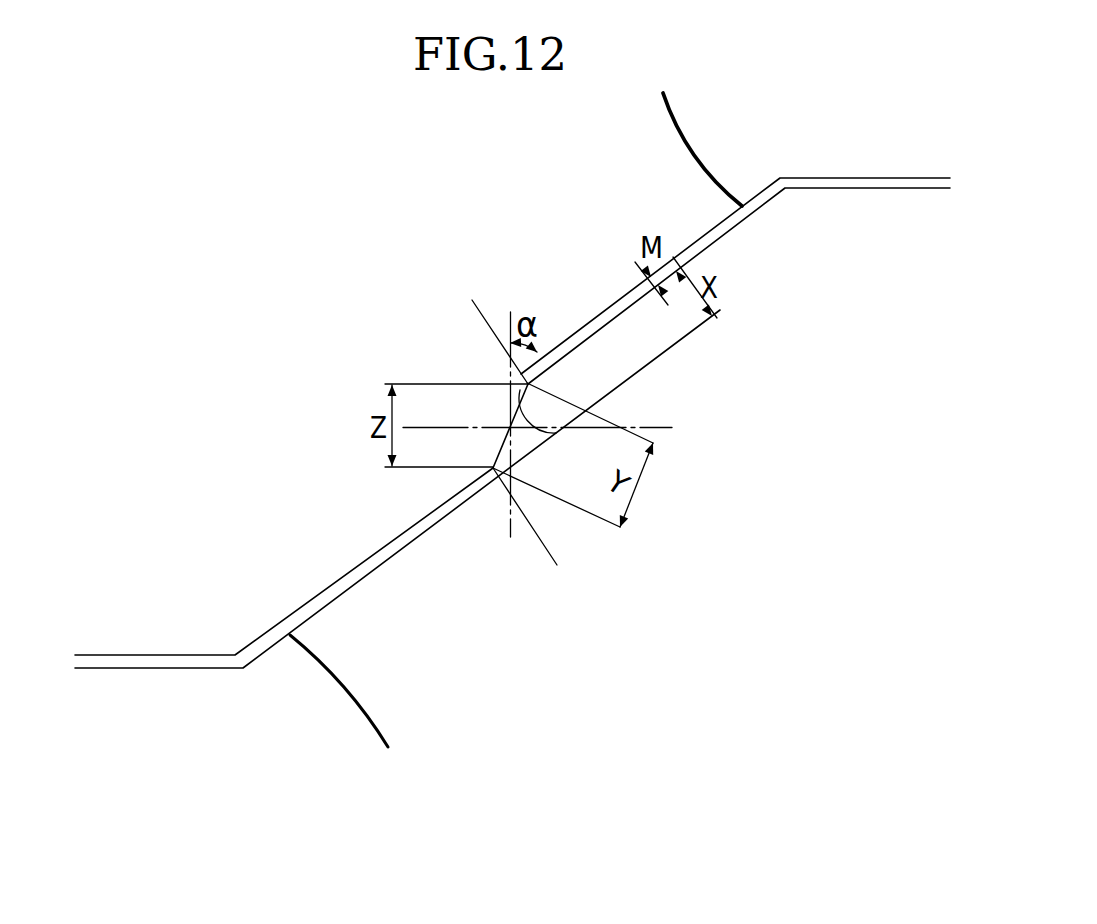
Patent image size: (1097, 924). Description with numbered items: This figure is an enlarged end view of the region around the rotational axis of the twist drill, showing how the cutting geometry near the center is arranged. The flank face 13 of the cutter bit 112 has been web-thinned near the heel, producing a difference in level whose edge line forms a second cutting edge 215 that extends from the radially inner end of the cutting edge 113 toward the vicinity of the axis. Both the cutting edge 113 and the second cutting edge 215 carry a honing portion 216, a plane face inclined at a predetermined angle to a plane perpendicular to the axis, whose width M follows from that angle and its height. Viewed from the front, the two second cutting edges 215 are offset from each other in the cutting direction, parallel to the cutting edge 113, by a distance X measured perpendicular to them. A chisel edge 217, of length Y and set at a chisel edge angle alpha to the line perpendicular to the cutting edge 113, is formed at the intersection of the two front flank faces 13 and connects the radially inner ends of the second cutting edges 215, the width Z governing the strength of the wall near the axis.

The flank face 13 is at (468, 332).
The cutter bit 112 is at (718, 414).
The cutting edge 113 is at (512, 411).
The second cutting edge 215 is at (555, 334).
The honing portion 216 is at (837, 186).
The chisel edge 217 is at (556, 433).